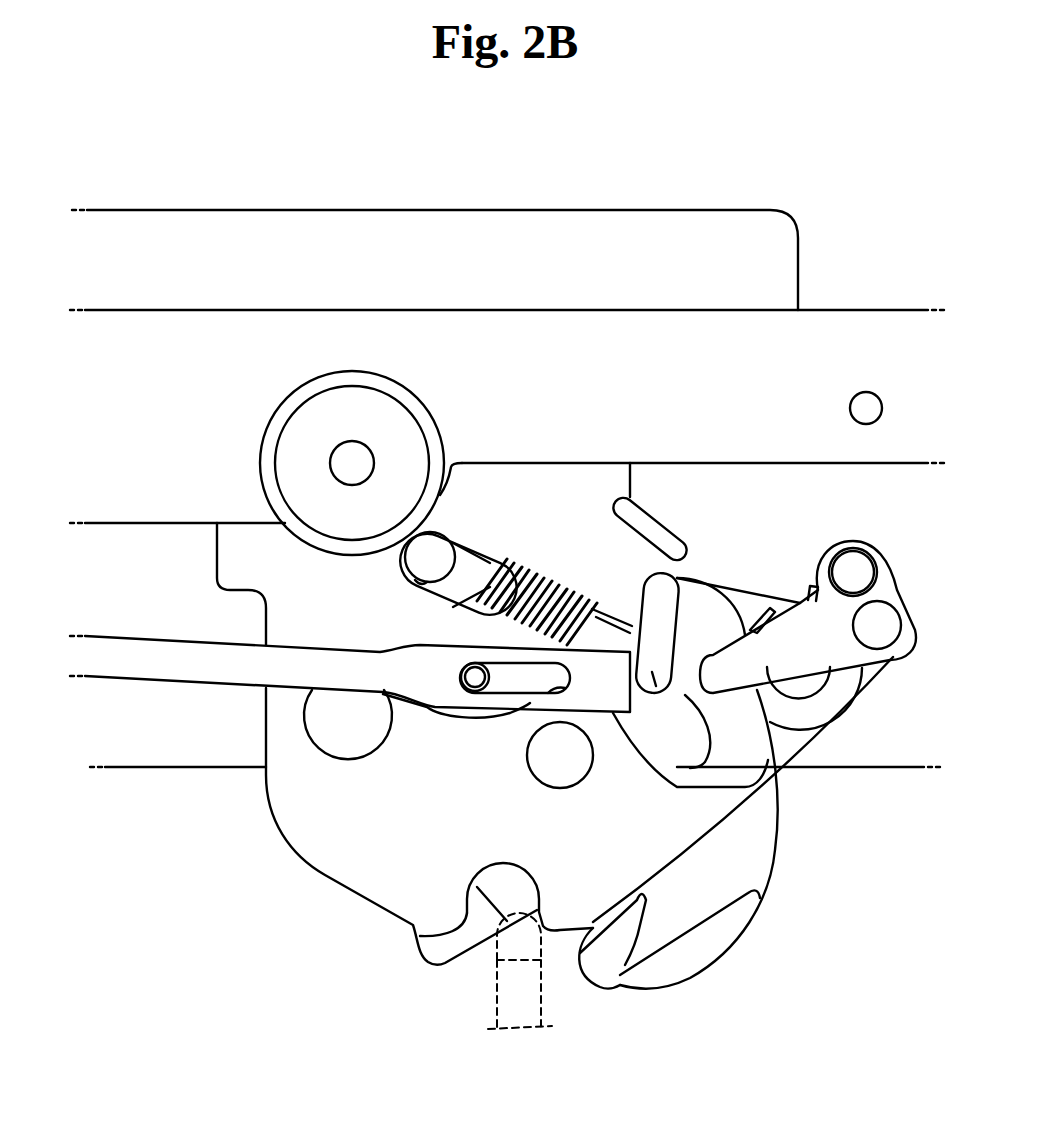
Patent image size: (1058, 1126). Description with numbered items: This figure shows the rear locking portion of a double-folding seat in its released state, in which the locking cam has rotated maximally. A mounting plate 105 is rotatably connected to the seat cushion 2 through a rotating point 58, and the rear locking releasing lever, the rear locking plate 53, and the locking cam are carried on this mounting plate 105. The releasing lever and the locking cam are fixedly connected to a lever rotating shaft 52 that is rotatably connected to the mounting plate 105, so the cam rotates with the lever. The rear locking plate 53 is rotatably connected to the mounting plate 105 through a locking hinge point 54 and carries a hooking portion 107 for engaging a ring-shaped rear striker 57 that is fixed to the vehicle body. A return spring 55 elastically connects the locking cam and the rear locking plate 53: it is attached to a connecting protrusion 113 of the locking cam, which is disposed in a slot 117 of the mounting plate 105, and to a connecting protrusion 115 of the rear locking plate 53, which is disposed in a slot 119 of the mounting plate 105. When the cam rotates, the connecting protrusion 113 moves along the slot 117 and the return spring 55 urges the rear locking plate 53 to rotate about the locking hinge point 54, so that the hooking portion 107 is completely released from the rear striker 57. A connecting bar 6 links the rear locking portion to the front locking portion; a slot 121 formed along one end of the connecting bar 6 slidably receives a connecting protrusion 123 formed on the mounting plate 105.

The seat cushion 2 is at (207, 332).
The connecting bar 6 is at (157, 677).
The lever rotating shaft 52 is at (321, 741).
The rear locking plate 53 is at (763, 877).
The locking hinge point 54 is at (538, 767).
The return spring 55 is at (568, 588).
The rear striker 57 is at (495, 1008).
The rotating point 58 is at (352, 448).
The mounting plate 105 is at (317, 861).
The hooking portion 107 is at (606, 986).
The connecting protrusion 113 is at (442, 548).
The connecting protrusion 115 is at (640, 697).
The slot 117 is at (474, 572).
The slot 119 is at (667, 727).
The slot 121 is at (513, 690).
The connecting protrusion 123 is at (472, 686).